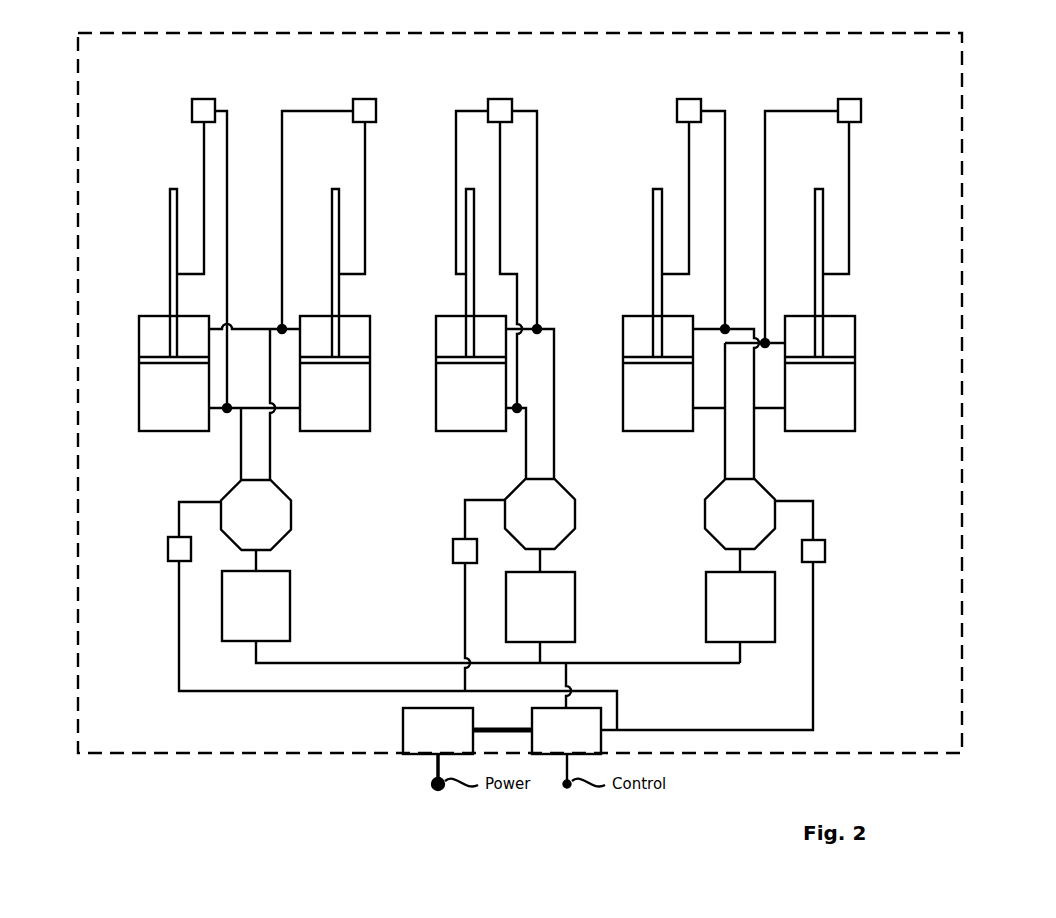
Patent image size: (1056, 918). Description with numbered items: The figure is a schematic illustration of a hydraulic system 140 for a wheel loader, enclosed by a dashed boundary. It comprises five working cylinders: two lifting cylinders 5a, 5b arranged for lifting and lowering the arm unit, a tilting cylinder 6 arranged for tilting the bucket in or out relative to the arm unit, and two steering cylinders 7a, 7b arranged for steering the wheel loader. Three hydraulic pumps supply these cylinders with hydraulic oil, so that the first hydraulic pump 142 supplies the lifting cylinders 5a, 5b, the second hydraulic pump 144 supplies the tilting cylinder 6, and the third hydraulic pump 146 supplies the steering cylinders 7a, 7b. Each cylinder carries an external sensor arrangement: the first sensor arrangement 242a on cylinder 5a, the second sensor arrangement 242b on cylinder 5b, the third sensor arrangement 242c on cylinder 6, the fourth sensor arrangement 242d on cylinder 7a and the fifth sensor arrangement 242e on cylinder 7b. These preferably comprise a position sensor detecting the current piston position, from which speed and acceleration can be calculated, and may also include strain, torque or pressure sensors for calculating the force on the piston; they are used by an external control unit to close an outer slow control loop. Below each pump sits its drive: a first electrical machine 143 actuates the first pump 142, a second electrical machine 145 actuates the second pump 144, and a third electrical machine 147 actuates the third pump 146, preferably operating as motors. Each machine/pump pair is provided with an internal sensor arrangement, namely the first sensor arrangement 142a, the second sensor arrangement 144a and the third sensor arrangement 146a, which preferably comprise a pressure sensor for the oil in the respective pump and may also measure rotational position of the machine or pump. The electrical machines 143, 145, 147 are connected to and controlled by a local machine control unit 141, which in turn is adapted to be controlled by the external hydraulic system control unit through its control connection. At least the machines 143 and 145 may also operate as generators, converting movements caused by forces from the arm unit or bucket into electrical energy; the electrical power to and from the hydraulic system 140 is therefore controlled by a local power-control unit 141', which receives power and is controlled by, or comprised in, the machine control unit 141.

The hydraulic system 140 is at (947, 187).
The first sensor arrangement 242a is at (205, 100).
The second sensor arrangement 242b is at (366, 100).
The third sensor arrangement 242c is at (500, 100).
The fourth sensor arrangement 242d is at (689, 100).
The fifth sensor arrangement 242e is at (850, 100).
The lifting cylinder 5a is at (158, 330).
The lifting cylinder 5b is at (318, 330).
The tilting cylinder 6 is at (456, 330).
The steering cylinder 7a is at (645, 330).
The steering cylinder 7b is at (805, 330).
The first hydraulic pump 142 is at (283, 508).
The first sensor arrangement 142a is at (168, 552).
The first electrical machine 143 is at (283, 597).
The second hydraulic pump 144 is at (568, 504).
The second sensor arrangement 144a is at (453, 554).
The second electrical machine 145 is at (568, 593).
The third hydraulic pump 146 is at (708, 504).
The third sensor arrangement 146a is at (820, 547).
The third electrical machine 147 is at (710, 593).
The machine control unit 141 is at (566, 748).
The power-control unit 141' is at (467, 749).